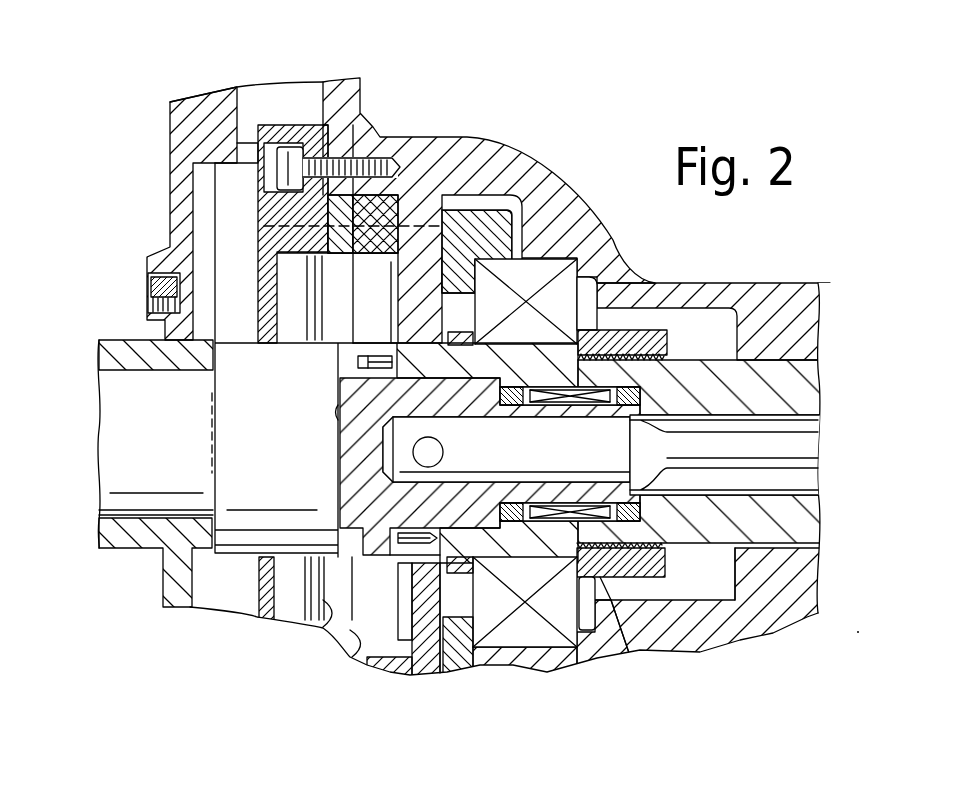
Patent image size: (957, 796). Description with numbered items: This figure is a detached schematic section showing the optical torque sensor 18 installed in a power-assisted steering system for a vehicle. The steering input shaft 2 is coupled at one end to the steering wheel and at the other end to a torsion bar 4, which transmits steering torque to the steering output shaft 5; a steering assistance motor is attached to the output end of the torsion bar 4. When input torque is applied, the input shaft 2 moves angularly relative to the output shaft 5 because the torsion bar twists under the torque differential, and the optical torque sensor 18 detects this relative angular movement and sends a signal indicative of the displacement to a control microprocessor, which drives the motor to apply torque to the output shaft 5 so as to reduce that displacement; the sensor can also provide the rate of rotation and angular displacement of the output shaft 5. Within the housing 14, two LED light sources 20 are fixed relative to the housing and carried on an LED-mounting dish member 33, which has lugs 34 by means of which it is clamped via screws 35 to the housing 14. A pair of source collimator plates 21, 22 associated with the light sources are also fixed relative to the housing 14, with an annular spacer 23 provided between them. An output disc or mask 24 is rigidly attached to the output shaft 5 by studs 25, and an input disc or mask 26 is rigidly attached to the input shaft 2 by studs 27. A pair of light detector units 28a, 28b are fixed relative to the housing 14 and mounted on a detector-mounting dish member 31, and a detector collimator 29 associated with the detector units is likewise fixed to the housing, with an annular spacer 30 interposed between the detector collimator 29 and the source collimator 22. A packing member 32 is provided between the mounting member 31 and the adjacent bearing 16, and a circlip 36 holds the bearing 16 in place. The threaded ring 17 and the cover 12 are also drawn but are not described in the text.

The steering input shaft 2 is at (770, 375).
The torsion bar 4 is at (790, 452).
The steering output shaft 5 is at (150, 398).
The housing cover 12 is at (180, 197).
The housing 14 is at (463, 157).
The bearing 16 is at (562, 247).
The threaded ring 17 is at (608, 577).
The optical torque sensor 18 is at (240, 268).
The LED light sources 20 is at (280, 344).
The source collimator plate 21 is at (302, 125).
The source collimator plate 22 is at (375, 150).
The annular spacer 23 is at (321, 125).
The output disc or mask 24 is at (382, 675).
The studs 25 is at (358, 360).
The input disc or mask 26 is at (410, 673).
The studs 27 is at (480, 668).
The light detector unit 28a is at (352, 400).
The light detector unit 28b is at (457, 673).
The detector collimator 29 is at (480, 233).
The annular spacer 30 is at (397, 217).
The detector-mounting dish member 31 is at (522, 240).
The packing member 32 is at (525, 262).
The LED-mounting dish member 33 is at (262, 222).
The lugs 34 is at (312, 125).
The screws 35 is at (290, 150).
The circlip 36 is at (563, 673).